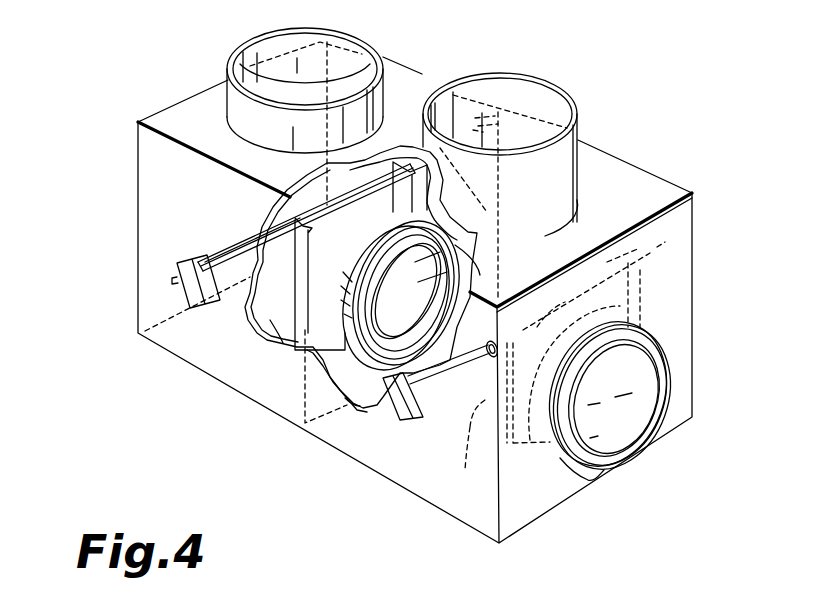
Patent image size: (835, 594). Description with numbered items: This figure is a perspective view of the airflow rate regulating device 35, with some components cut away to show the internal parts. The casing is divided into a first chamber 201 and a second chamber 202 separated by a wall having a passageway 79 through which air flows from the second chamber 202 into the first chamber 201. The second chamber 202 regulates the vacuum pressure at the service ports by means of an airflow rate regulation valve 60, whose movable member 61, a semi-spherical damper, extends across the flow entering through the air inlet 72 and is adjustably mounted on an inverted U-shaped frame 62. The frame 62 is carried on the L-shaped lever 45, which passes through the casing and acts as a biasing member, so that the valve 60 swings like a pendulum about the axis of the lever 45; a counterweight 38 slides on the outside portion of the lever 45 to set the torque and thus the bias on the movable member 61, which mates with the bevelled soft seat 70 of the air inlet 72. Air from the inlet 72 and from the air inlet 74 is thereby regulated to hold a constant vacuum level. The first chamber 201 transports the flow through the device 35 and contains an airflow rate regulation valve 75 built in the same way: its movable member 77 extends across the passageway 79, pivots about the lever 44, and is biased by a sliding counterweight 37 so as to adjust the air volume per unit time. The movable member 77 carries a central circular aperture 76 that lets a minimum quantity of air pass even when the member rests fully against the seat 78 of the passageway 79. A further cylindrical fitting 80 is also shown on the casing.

The airflow rate regulating device 35 is at (662, 148).
The counterweight 37 is at (187, 292).
The counterweight 38 is at (397, 413).
The lever 44 is at (227, 258).
The lever 45 is at (440, 380).
The airflow rate regulation valve 60 is at (627, 298).
The movable member 61 is at (633, 406).
The U-shaped frame 62 is at (470, 427).
The seat 70 is at (592, 470).
The air inlet 72 is at (693, 390).
The air inlet 74 is at (543, 110).
The airflow rate regulation valve 75 is at (240, 290).
The circular aperture 76 is at (417, 280).
The movable member 77 is at (480, 214).
The seat 78 is at (362, 345).
The passageway 79 is at (467, 267).
The cylinder 80 is at (253, 50).
The first chamber 201 is at (300, 343).
The second chamber 202 is at (358, 403).